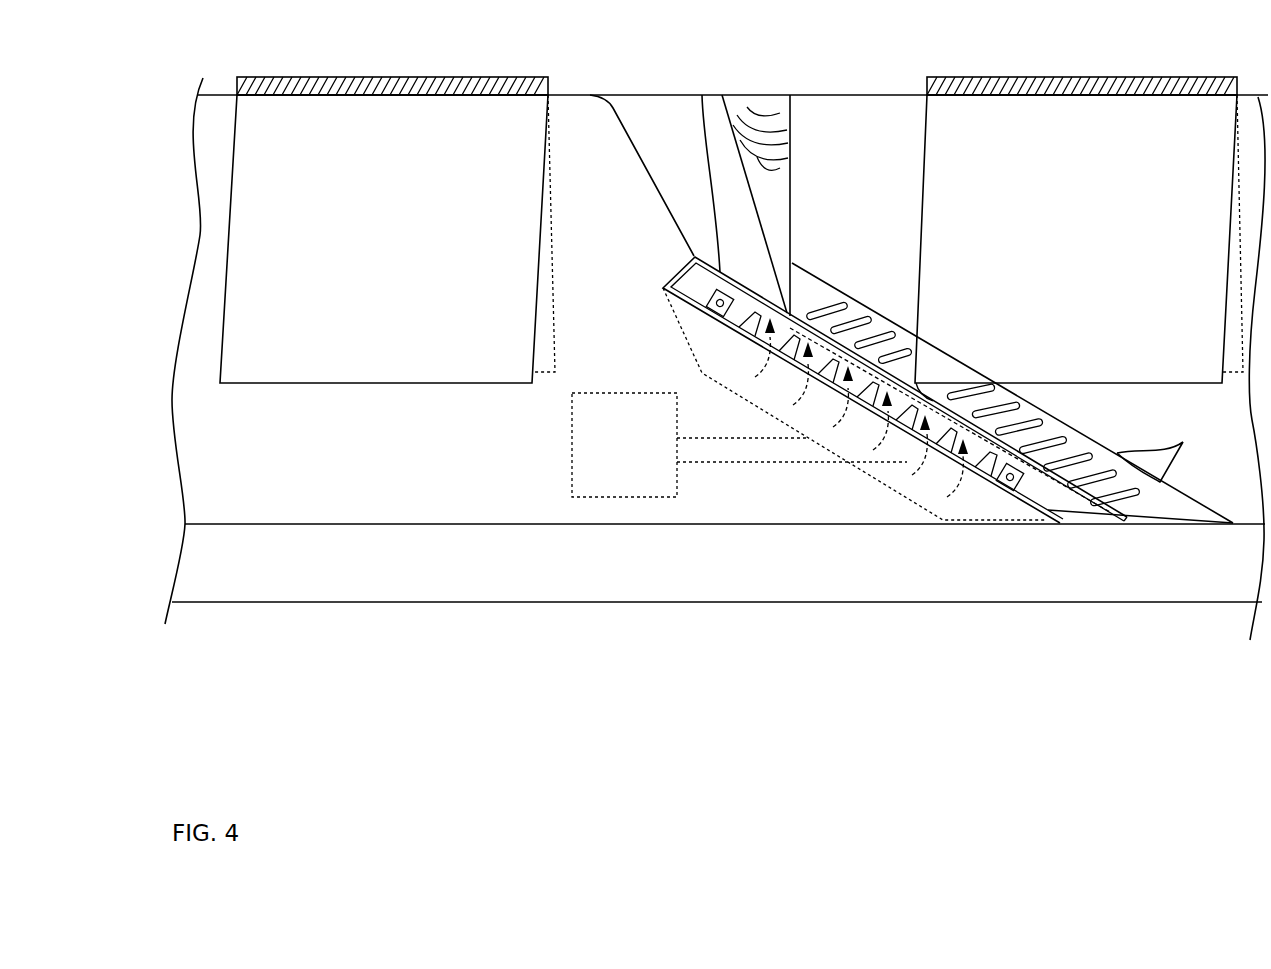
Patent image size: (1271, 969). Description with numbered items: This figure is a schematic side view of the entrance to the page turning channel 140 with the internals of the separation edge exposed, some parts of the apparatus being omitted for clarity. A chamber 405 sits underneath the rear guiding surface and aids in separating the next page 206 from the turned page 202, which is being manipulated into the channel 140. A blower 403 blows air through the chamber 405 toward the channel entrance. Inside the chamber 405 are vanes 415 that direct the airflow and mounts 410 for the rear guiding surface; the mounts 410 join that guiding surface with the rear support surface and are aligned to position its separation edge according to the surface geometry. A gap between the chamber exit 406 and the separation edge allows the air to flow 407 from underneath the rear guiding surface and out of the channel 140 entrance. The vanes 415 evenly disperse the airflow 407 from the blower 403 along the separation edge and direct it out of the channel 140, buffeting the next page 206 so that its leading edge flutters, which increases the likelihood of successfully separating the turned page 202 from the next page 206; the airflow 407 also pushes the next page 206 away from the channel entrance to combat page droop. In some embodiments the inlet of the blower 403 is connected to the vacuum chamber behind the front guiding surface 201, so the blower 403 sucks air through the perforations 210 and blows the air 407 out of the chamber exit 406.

The page turning channel 140 is at (642, 175).
The front guiding surface 201 is at (1160, 503).
The turned page 202 is at (1079, 239).
The next page 206 is at (387, 230).
The perforations 210 is at (1152, 447).
The blower 403 is at (620, 463).
The chamber 405 is at (967, 508).
The chamber exit 406 is at (702, 95).
The airflow 407 is at (903, 478).
The mounts 410 is at (712, 307).
The vanes 415 is at (982, 458).